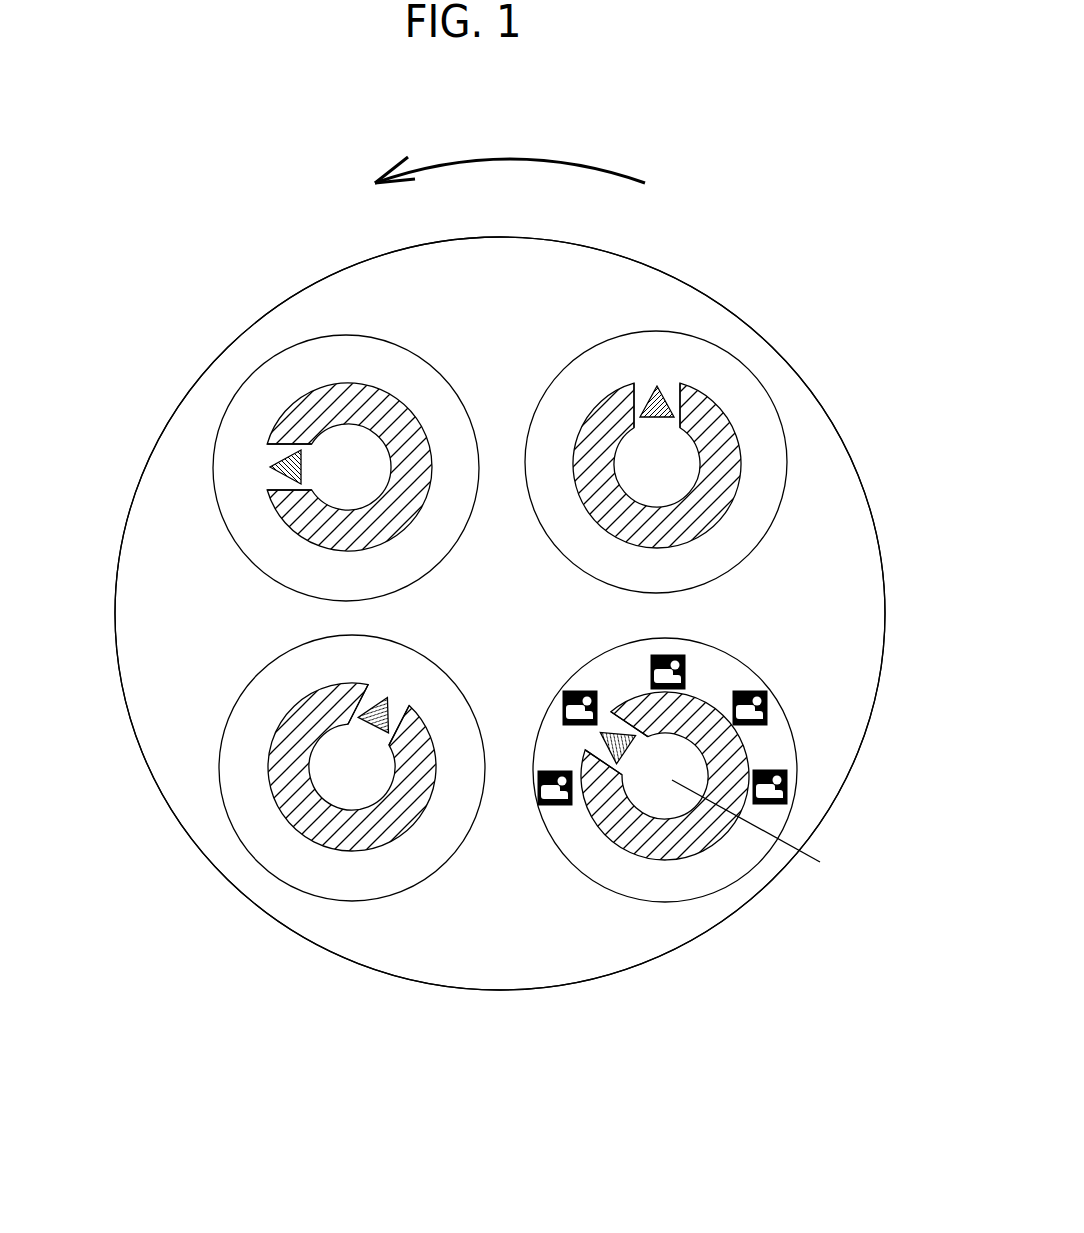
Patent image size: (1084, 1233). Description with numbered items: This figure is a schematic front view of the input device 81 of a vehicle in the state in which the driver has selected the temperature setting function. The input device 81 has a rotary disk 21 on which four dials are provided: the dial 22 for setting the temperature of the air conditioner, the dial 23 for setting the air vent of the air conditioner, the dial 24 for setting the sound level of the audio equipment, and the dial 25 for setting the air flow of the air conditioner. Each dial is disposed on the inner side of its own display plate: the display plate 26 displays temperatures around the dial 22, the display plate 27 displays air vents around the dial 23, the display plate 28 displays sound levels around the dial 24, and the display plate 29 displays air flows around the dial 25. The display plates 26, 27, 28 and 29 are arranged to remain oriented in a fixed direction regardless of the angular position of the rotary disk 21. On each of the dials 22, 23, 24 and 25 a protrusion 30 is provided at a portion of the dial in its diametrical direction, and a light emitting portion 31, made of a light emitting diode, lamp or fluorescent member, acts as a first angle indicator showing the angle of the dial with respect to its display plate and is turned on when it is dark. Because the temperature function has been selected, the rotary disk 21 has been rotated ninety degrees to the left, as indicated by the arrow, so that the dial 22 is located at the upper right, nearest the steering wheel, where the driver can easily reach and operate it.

The input device 81 is at (824, 222).
The rotary disk 21 is at (350, 930).
The dial for setting the temperature 22 is at (713, 442).
The dial for setting the air vent 23 is at (672, 840).
The dial for setting the sound level 24 is at (317, 822).
The dial for setting the air flow 25 is at (370, 405).
The display plate displaying temperatures 26 is at (772, 498).
The display plate displaying air vents 27 is at (712, 878).
The display plate displaying sound levels 28 is at (268, 847).
The display plate displaying air flows 29 is at (303, 370).
The protrusion 30 is at (271, 462).
The light emitting portion 31 is at (283, 452).